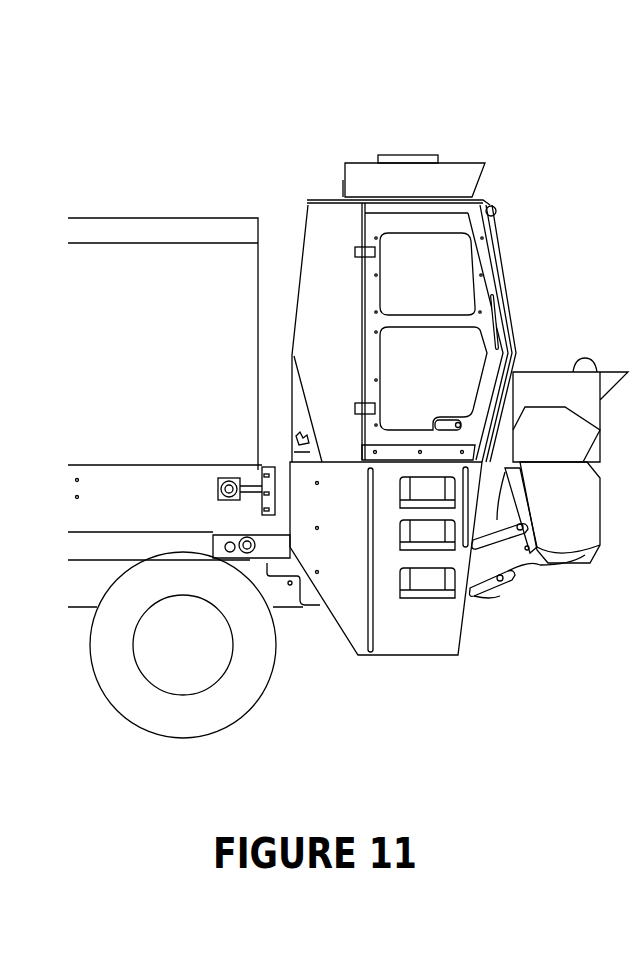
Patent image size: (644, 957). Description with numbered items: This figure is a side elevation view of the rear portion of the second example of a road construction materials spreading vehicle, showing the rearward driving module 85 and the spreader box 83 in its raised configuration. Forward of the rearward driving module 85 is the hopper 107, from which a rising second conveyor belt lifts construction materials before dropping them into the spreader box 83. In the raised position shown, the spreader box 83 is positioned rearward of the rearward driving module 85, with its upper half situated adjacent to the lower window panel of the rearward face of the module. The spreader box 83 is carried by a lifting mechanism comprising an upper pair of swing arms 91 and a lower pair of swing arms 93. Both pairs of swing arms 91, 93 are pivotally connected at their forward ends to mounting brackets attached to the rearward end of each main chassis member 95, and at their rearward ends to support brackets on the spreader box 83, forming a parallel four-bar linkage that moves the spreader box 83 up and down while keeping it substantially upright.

The hopper 107 is at (155, 215).
The rearward driving module 85 is at (305, 235).
The spreader box 83 is at (553, 372).
The lower pair of swing arms 93 is at (540, 567).
The upper pair of swing arms 91 is at (482, 592).
The main chassis member 95 is at (287, 607).